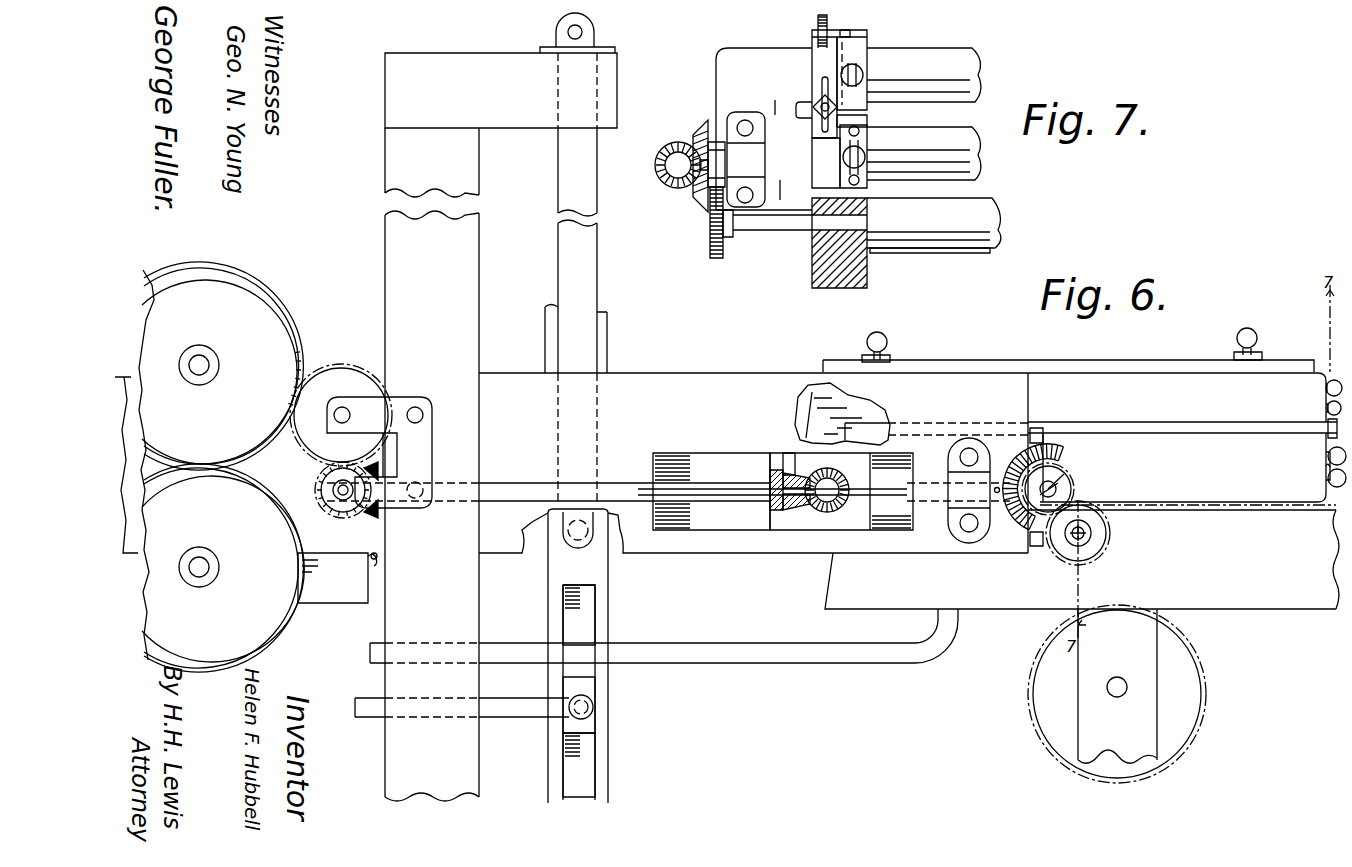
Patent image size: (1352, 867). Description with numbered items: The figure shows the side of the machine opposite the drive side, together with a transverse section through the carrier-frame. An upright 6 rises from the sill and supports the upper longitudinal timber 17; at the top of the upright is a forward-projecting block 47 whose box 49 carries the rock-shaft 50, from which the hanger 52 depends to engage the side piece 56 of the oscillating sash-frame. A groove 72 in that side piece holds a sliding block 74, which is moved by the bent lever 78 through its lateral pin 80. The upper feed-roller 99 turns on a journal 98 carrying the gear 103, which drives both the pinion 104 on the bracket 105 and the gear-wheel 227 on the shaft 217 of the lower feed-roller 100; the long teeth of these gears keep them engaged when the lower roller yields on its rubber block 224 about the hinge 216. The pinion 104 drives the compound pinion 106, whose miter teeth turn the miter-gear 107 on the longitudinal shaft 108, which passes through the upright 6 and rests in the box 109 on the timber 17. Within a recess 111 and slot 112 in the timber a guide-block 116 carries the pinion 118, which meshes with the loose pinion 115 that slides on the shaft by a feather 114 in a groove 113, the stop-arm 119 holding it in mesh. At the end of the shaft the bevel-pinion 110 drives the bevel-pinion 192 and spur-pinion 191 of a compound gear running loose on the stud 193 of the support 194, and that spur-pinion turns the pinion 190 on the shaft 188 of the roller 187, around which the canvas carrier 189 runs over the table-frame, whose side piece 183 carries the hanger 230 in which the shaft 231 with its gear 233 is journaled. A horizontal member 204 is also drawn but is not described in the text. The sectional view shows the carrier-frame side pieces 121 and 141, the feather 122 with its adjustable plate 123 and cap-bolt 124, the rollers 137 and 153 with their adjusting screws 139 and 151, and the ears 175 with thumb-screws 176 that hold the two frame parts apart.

In FIG. 6, the upright 6 is at (433, 288).
In FIG. 6, the upper longitudinal timber 17 is at (902, 463).
In FIG. 7, the upper longitudinal timber 17 is at (764, 129).
In FIG. 6, the forward-projecting block 47 is at (501, 90).
In FIG. 6, the box 49 is at (596, 40).
In FIG. 6, the rock-shaft 50 is at (572, 31).
In FIG. 6, the hanger 52 is at (576, 315).
In FIG. 6, the side piece of the oscillating sash-frame 56 is at (608, 581).
In FIG. 6, the groove 72 is at (586, 618).
In FIG. 6, the sliding block 74 is at (600, 686).
In FIG. 6, the bent lever 78 is at (515, 704).
In FIG. 6, the lateral pin 80 is at (594, 708).
In FIG. 6, the journal 98 is at (206, 363).
In FIG. 6, the upper feed-roller 99 is at (219, 372).
In FIG. 6, the lower feed-roller 100 is at (223, 569).
In FIG. 6, the gear 103 is at (284, 319).
In FIG. 6, the pinion 104 is at (338, 370).
In FIG. 6, the bracket 105 is at (394, 466).
In FIG. 6, the compound pinion 106 is at (319, 488).
In FIG. 6, the miter-gear 107 is at (366, 516).
In FIG. 6, the longitudinal shaft 108 is at (513, 482).
In FIG. 7, the longitudinal shaft 108 is at (693, 185).
In FIG. 6, the box 109 is at (950, 516).
In FIG. 7, the box 109 is at (716, 118).
In FIG. 6, the bevel-pinion 110 is at (1018, 512).
In FIG. 7, the bevel-pinion 110 is at (656, 178).
In FIG. 6, the recess 111 is at (669, 455).
In FIG. 6, the slot 112 is at (703, 510).
In FIG. 6, the longitudinal groove 113 is at (752, 497).
In FIG. 6, the feather 114 is at (793, 511).
In FIG. 6, the loose pinion 115 is at (797, 463).
In FIG. 6, the guide-block 116 is at (856, 522).
In FIG. 6, the pinion 118 is at (838, 478).
In FIG. 6, the stop-arm 119 is at (771, 470).
In FIG. 7, the side piece of the lower carrier-frame part 121 is at (825, 87).
In FIG. 6, the feather 122 is at (1274, 419).
In FIG. 7, the feather 122 is at (768, 76).
In FIG. 6, the vertical plate 123 is at (1326, 451).
In FIG. 7, the vertical plate 123 is at (818, 140).
In FIG. 6, the cap-bolt 124 is at (1327, 408).
In FIG. 7, the cap-bolt 124 is at (820, 104).
In FIG. 7, the transverse roller 137 is at (924, 153).
In FIG. 6, the adjusting thumb-screw 139 is at (1326, 470).
In FIG. 7, the adjusting thumb-screw 139 is at (867, 157).
In FIG. 6, the side piece of the upper carrier-frame part 141 is at (1148, 366).
In FIG. 7, the side piece of the upper carrier-frame part 141 is at (861, 42).
In FIG. 6, the adjusting screw 151 is at (1332, 380).
In FIG. 7, the adjusting screw 151 is at (866, 76).
In FIG. 7, the upper transverse roller 153 is at (924, 75).
In FIG. 6, the lateral ear 175 is at (891, 357).
In FIG. 7, the lateral ear 175 is at (846, 30).
In FIG. 6, the thumb-screw 176 is at (885, 337).
In FIG. 7, the thumb-screw 176 is at (830, 18).
In FIG. 6, the side piece of the table-frame 183 is at (1082, 559).
In FIG. 7, the side piece of the table-frame 183 is at (868, 268).
In FIG. 7, the roller 187 is at (934, 223).
In FIG. 6, the shaft 188 is at (1092, 533).
In FIG. 7, the shaft 188 is at (772, 234).
In FIG. 6, the canvas endless carrier 189 is at (1206, 513).
In FIG. 7, the canvas endless carrier 189 is at (933, 254).
In FIG. 6, the pinion 190 is at (1105, 552).
In FIG. 7, the pinion 190 is at (708, 256).
In FIG. 6, the spur-pinion 191 is at (1056, 431).
In FIG. 7, the spur-pinion 191 is at (722, 160).
In FIG. 6, the bevel-pinion 192 is at (1062, 490).
In FIG. 7, the bevel-pinion 192 is at (700, 208).
In FIG. 6, the stud 193 is at (1066, 472).
In FIG. 7, the stud 193 is at (770, 167).
In FIG. 6, the support 194 is at (1037, 547).
In FIG. 7, the support 194 is at (762, 140).
In FIG. 6, the rod 204 is at (820, 640).
In FIG. 6, the hinge 216 is at (378, 560).
In FIG. 6, the transverse shaft 217 is at (208, 567).
In FIG. 6, the rubber block 224 is at (356, 583).
In FIG. 6, the gear-wheel 227 is at (200, 650).
In FIG. 6, the hanger 230 is at (1117, 686).
In FIG. 6, the transverse shaft 231 is at (1122, 671).
In FIG. 6, the gear 233 is at (1052, 718).